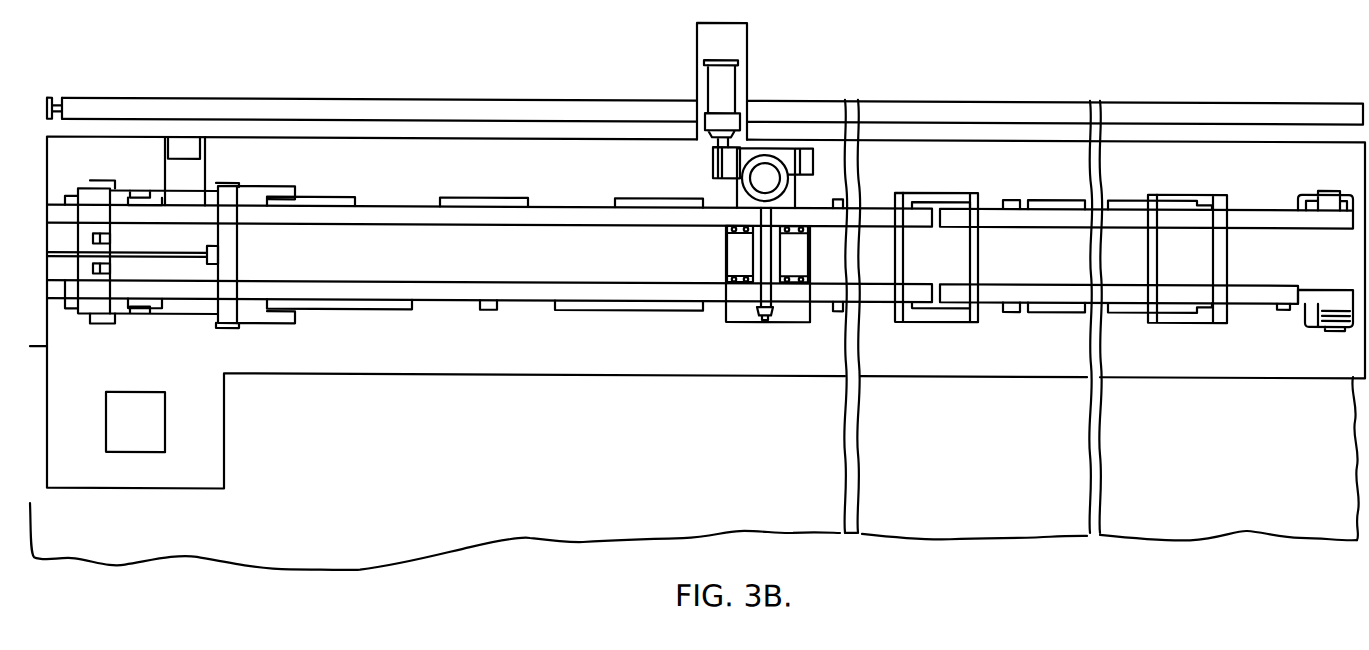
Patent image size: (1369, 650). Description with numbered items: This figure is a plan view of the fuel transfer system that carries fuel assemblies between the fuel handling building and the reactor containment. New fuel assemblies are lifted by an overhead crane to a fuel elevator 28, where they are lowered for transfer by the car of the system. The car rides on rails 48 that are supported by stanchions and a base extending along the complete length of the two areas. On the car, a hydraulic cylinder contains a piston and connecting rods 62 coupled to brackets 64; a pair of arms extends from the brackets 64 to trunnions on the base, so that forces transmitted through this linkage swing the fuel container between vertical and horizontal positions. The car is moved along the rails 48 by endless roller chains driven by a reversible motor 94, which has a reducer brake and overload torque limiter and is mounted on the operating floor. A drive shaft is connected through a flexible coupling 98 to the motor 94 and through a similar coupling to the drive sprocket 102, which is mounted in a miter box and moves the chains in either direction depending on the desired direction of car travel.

The fuel elevator 28 is at (152, 425).
The rails 48 is at (380, 209).
The connecting rods 62 is at (143, 251).
The brackets 64 is at (231, 262).
The reversible motor 94 is at (729, 88).
The flexible coupling 98 is at (701, 165).
The drive sprocket 102 is at (768, 151).